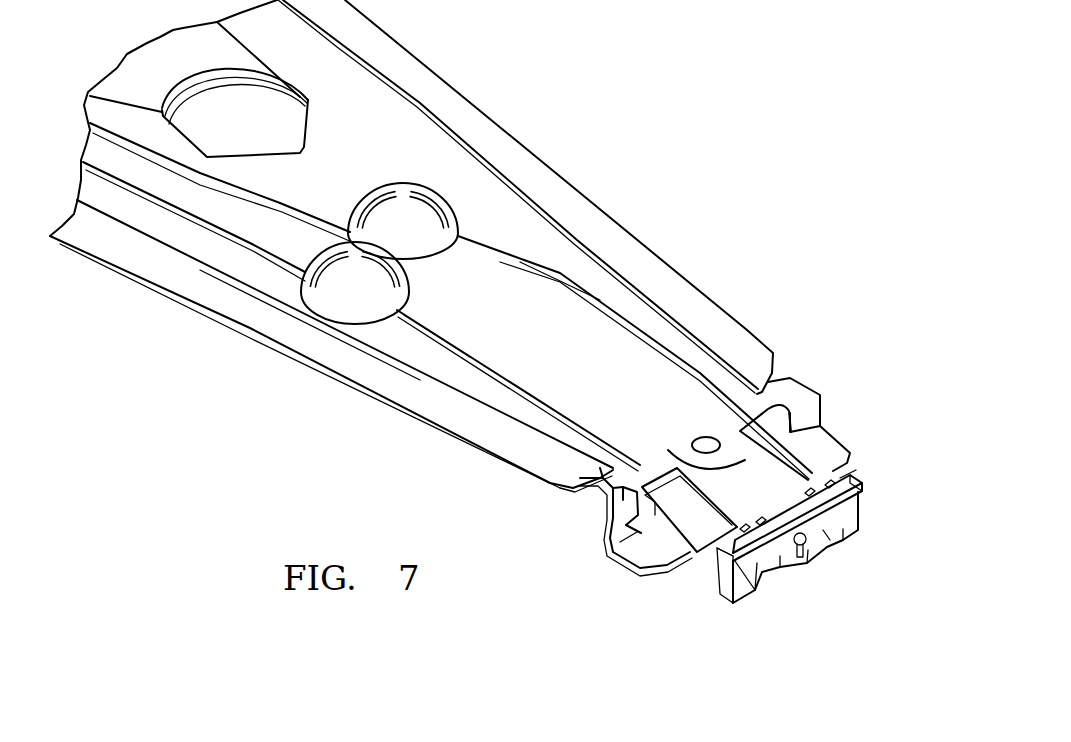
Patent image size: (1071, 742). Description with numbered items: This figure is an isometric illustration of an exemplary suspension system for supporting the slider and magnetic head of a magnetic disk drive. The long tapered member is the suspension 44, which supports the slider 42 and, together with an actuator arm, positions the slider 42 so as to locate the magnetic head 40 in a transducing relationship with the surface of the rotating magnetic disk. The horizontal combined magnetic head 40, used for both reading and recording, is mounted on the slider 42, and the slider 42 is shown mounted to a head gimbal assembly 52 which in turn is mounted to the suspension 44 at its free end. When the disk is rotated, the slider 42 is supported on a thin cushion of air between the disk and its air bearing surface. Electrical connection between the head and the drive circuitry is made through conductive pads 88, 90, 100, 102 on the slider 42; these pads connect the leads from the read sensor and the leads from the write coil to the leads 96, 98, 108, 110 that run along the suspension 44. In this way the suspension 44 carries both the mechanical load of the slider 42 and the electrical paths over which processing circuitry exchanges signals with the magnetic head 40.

The suspension 44 is at (600, 195).
The lead 98 is at (653, 338).
The lead 110 is at (557, 283).
The lead 108 is at (470, 355).
The lead 96 is at (450, 348).
The head gimbal assembly 52 is at (746, 484).
The slider 42 is at (672, 582).
The magnetic head 40 is at (808, 566).
The conductive pad 90 is at (853, 470).
The conductive pad 102 is at (860, 523).
The conductive pad 88 is at (720, 560).
The conductive pad 100 is at (752, 590).